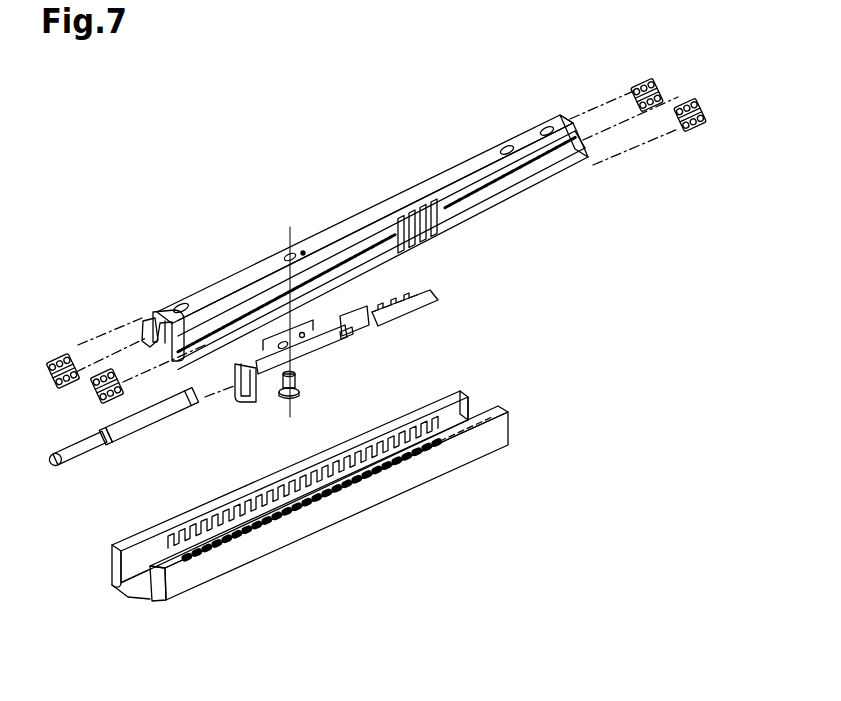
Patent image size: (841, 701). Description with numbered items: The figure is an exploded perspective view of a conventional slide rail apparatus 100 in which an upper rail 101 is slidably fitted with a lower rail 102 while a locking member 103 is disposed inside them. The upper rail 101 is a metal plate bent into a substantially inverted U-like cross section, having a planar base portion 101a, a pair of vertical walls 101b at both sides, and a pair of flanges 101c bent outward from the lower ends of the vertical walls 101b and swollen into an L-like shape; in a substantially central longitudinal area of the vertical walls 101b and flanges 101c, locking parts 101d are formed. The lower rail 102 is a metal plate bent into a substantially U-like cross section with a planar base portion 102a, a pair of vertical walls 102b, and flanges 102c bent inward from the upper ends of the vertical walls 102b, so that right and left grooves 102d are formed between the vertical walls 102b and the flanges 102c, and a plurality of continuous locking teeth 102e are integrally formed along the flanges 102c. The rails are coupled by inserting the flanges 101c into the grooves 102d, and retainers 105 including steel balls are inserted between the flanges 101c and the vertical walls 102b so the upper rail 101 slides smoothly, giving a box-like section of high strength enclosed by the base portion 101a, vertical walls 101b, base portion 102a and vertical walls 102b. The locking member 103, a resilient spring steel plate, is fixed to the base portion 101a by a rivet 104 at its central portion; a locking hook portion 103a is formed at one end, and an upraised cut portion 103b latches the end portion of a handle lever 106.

The slide rail apparatus 100 is at (328, 192).
The upper rail 101 is at (421, 184).
The base portion 101a is at (181, 303).
The vertical walls 101b is at (171, 304).
The flanges 101c is at (142, 322).
The locking parts 101d is at (430, 244).
The lower rail 102 is at (338, 513).
The base portion 102a is at (119, 584).
The vertical walls 102b is at (114, 571).
The flanges 102c is at (150, 553).
The grooves 102d is at (113, 553).
The locking teeth 102e is at (283, 490).
The locking member 103 is at (388, 350).
The locking hook portion 103a is at (418, 322).
The upraised cut portion 103b is at (344, 338).
The rivet 104 is at (300, 396).
The retainers 105 is at (637, 78).
The handle lever 106 is at (77, 456).